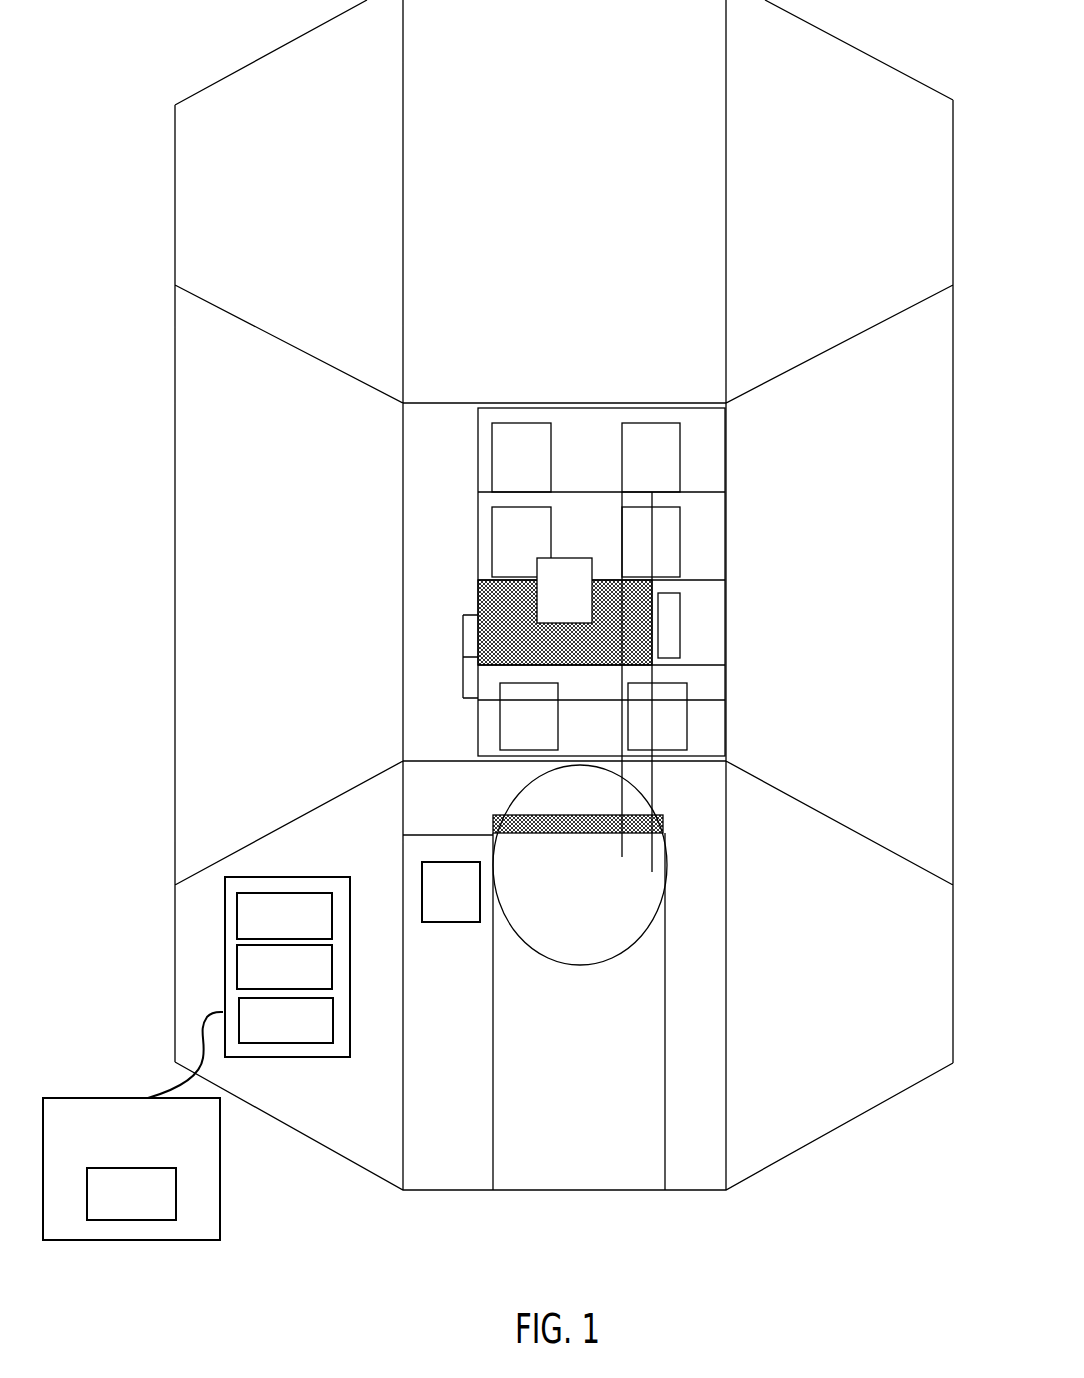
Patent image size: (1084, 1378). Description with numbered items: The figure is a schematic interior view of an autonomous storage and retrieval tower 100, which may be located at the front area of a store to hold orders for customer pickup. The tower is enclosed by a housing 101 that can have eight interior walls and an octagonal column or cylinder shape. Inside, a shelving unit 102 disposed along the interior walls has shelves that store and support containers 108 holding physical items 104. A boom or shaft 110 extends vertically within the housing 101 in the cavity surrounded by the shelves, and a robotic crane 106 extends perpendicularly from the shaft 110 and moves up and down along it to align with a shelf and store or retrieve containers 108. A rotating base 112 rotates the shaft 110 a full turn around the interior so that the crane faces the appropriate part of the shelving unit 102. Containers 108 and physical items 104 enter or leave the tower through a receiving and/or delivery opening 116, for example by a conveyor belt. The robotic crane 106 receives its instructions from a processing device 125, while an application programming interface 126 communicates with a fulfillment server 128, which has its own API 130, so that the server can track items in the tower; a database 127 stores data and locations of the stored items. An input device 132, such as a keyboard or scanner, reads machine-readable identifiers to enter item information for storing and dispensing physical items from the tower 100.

The autonomous storage and retrieval tower 100 is at (878, 1166).
The housing 101 is at (243, 219).
The shelving unit 102 is at (478, 458).
The physical items 104 is at (492, 543).
The robotic crane 106 is at (478, 700).
The containers 108 is at (478, 624).
The shaft 110 is at (621, 760).
The rotating base 112 is at (517, 795).
The receiving and/or delivery opening 116 is at (642, 957).
The processing device 125 is at (287, 967).
The application programming interface 126 is at (284, 967).
The database 127 is at (286, 1020).
The fulfillment server 128 is at (133, 1126).
The API 130 is at (131, 1194).
The input device 132 is at (451, 892).